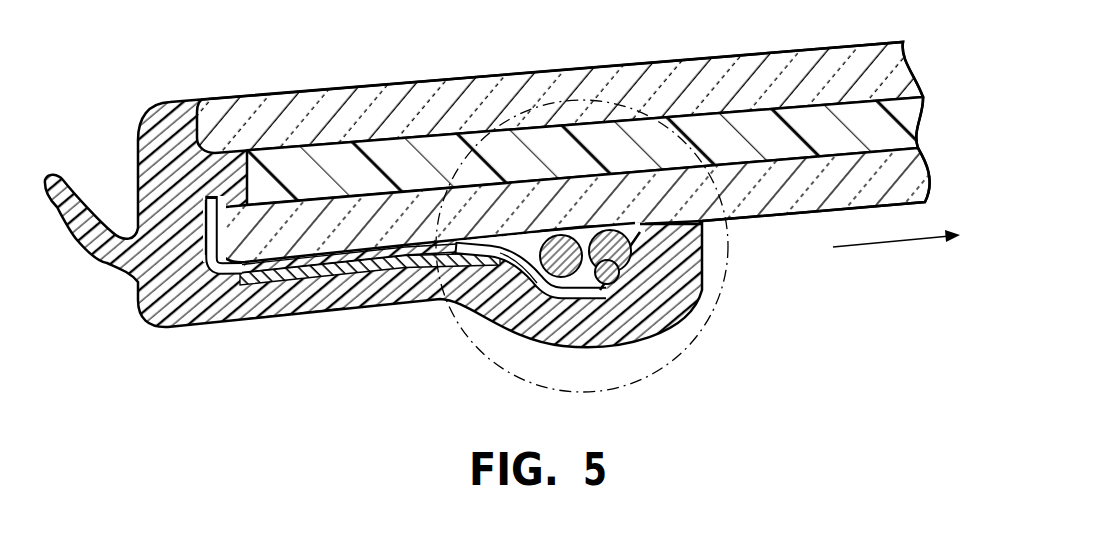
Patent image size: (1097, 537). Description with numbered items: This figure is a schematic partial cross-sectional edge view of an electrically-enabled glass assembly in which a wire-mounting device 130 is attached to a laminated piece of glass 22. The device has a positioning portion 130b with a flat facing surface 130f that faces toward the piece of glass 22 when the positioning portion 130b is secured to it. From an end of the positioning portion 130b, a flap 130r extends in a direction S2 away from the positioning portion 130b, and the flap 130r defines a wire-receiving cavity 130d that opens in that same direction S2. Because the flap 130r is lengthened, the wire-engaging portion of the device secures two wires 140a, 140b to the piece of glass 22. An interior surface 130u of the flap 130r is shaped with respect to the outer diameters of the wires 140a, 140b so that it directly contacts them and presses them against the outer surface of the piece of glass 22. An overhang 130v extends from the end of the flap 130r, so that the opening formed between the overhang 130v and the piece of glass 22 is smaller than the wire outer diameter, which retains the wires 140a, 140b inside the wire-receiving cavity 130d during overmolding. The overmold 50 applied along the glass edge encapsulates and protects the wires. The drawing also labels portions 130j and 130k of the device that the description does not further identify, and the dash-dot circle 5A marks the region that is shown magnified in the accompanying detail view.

The overmold 50 is at (150, 113).
The piece of glass 22 is at (270, 93).
The wire-mounting device 130 is at (525, 280).
The vertical arm of contact spring 130k is at (205, 243).
The flap 130r is at (578, 307).
The wire-receiving cavity 130d is at (584, 231).
The interior surface of the flap 130u is at (610, 297).
The overhang 130v is at (710, 300).
The flat facing surface 130f is at (267, 318).
The housing intermediate portion 130j is at (320, 310).
The positioning portion 130b is at (397, 280).
The wire 140a is at (545, 238).
The wire 140b is at (610, 230).
The magnified view region 5A is at (712, 182).
The direction S2 is at (913, 246).